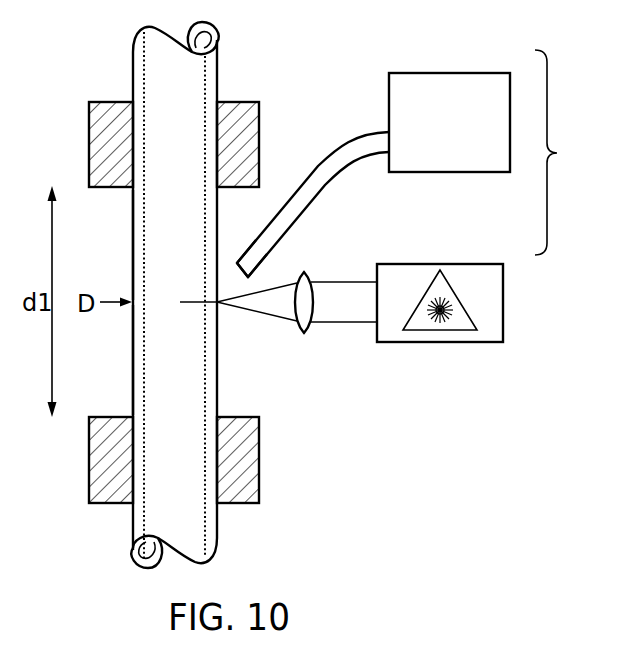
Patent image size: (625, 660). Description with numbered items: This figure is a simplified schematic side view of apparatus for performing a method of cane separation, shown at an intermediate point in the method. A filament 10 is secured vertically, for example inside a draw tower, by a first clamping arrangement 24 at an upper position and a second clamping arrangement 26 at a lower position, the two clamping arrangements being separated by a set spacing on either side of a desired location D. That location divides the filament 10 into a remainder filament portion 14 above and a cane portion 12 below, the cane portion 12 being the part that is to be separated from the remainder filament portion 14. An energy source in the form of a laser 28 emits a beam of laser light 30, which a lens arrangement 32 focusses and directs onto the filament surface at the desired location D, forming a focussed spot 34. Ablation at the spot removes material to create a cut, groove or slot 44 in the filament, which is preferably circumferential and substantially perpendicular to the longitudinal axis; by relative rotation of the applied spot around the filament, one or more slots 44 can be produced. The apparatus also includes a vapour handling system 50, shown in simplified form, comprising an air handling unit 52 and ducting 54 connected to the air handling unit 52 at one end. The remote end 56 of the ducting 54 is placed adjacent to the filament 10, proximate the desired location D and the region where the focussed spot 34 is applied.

The filament 10 is at (132, 55).
The cane portion 12 is at (132, 380).
The remainder filament portion 14 is at (132, 237).
The first clamping arrangement 24 is at (88, 125).
The second clamping arrangement 26 is at (88, 467).
The laser 28 is at (415, 264).
The beam of laser light 30 is at (350, 281).
The lens arrangement 32 is at (304, 274).
The focussed spot 34 is at (220, 306).
The slot 44 is at (192, 306).
The vapour handling system 50 is at (565, 152).
The air handling unit 52 is at (418, 72).
The ducting 54 is at (352, 137).
The remote end of the ducting 56 is at (250, 250).